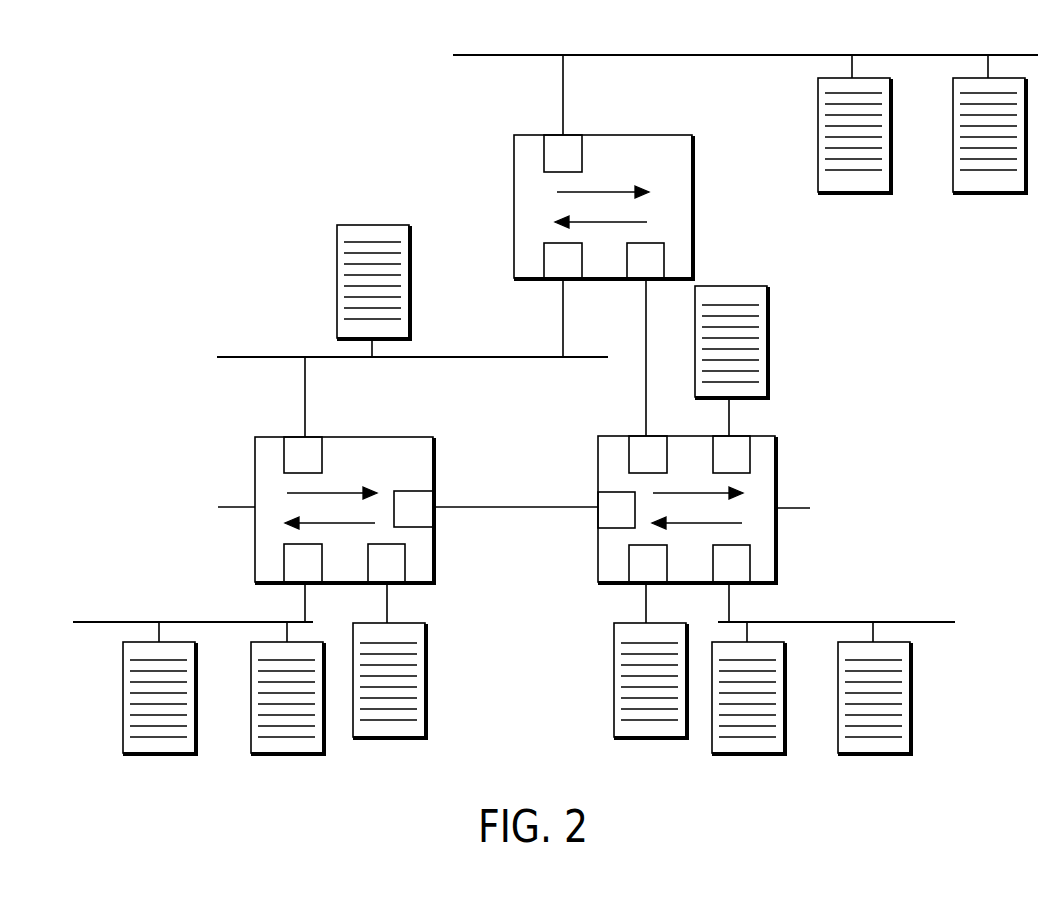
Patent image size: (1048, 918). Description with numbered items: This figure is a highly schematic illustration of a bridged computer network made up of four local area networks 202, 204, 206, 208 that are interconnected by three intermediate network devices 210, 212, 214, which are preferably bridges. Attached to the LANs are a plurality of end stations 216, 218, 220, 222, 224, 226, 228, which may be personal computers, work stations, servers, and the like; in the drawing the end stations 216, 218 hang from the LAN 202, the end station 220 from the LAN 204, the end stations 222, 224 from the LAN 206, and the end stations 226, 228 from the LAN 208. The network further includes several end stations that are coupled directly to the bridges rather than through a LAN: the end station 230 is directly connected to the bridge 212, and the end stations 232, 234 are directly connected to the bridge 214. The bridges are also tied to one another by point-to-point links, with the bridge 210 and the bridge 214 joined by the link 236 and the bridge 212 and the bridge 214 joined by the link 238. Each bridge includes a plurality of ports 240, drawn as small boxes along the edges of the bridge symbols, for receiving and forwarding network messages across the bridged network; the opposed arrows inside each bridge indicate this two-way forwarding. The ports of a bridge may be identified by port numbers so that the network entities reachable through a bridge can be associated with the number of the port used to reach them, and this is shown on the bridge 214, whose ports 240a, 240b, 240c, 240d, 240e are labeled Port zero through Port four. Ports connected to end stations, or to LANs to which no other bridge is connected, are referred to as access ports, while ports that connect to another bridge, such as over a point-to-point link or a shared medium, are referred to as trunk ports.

The local area network 202 is at (745, 38).
The local area network 204 is at (412, 342).
The local area network 206 is at (193, 605).
The local area network 208 is at (836, 605).
The intermediate network device 210 is at (692, 172).
The intermediate network device 212 is at (255, 490).
The intermediate network device 214 is at (775, 467).
The end station 216 is at (852, 193).
The end station 218 is at (988, 193).
The end station 220 is at (337, 257).
The end station 222 is at (159, 754).
The end station 224 is at (287, 754).
The end station 226 is at (747, 754).
The end station 228 is at (873, 754).
The end station 230 is at (425, 673).
The end station 232 is at (767, 337).
The end station 234 is at (614, 673).
The point-to-point link 236 is at (645, 382).
The point-to-point link 238 is at (487, 507).
The port 240 is at (582, 151).
The port 240a is at (667, 448).
The port 240b is at (750, 448).
The port 240c is at (750, 556).
The port 240d is at (629, 556).
The port 240e is at (598, 493).